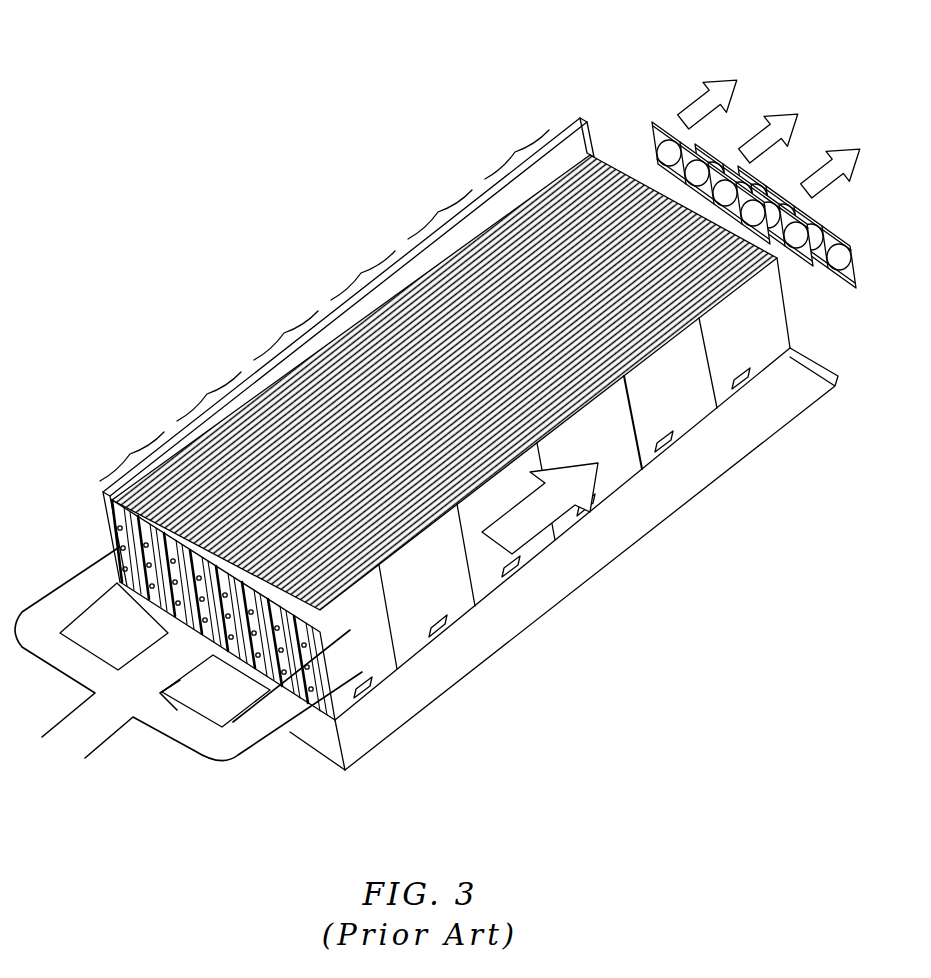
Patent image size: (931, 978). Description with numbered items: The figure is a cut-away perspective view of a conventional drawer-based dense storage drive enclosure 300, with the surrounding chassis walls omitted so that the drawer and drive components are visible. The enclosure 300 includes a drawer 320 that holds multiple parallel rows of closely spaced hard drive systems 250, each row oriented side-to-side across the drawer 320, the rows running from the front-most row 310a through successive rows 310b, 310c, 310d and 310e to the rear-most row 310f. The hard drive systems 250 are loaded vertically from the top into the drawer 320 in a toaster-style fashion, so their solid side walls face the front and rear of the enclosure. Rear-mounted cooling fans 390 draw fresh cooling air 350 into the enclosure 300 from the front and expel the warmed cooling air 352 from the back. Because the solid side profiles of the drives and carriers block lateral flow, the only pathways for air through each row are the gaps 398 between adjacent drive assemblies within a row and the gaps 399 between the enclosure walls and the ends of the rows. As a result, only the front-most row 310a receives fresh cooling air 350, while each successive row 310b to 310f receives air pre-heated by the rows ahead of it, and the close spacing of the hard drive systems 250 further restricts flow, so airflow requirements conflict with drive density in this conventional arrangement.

The drawer-based dense storage drive enclosure 300 is at (211, 166).
The front-most row of hard drive assemblies 310a is at (130, 454).
The row of hard drive assemblies 310b is at (207, 394).
The row of hard drive assemblies 310c is at (284, 333).
The row of hard drive assemblies 310d is at (361, 273).
The row of hard drive assemblies 310e is at (438, 212).
The rear-most row of hard drive assemblies 310f is at (515, 152).
The gaps between adjacent drive assemblies 398 is at (113, 540).
The drawer 320 is at (608, 538).
The gaps between enclosure walls and row ends 399 is at (388, 672).
The fresh cooling air 350 is at (253, 758).
The hard drive system 250 is at (135, 660).
The rear-mounted cooling fans 390 is at (790, 178).
The warmed cooling air 352 is at (833, 148).